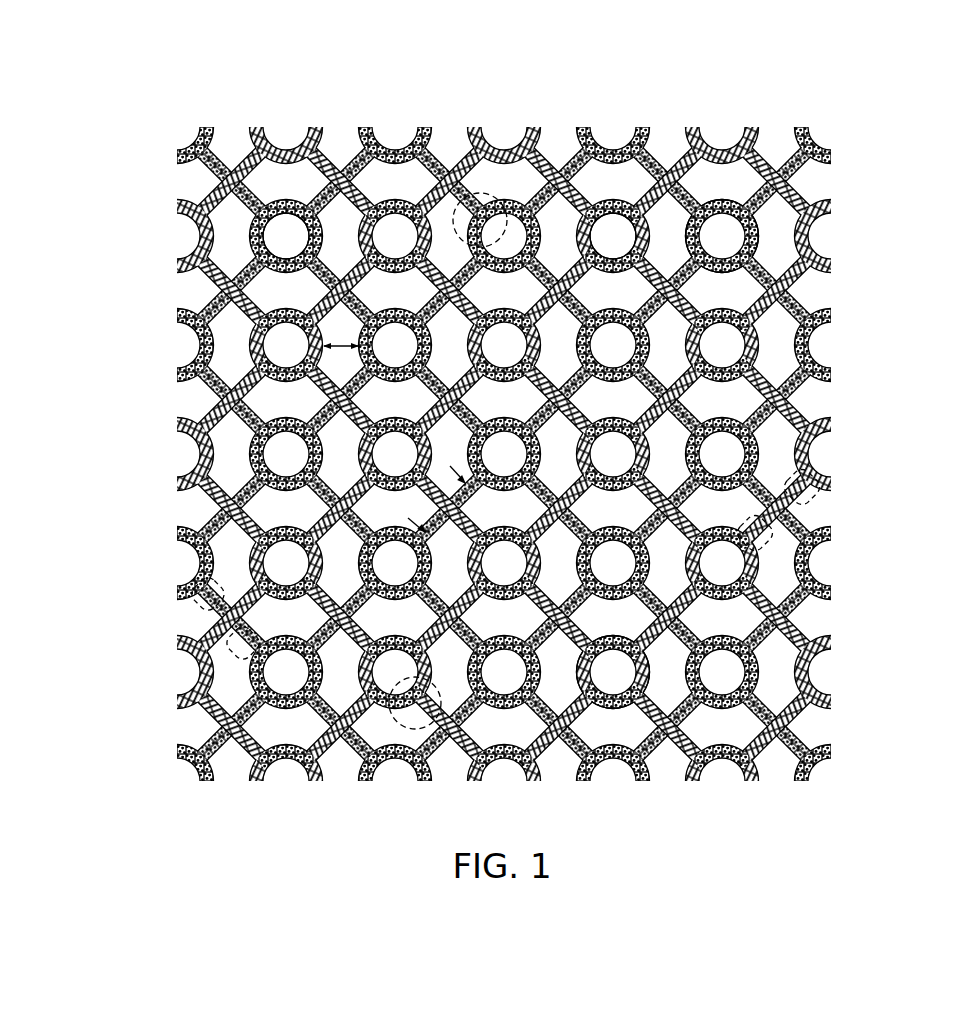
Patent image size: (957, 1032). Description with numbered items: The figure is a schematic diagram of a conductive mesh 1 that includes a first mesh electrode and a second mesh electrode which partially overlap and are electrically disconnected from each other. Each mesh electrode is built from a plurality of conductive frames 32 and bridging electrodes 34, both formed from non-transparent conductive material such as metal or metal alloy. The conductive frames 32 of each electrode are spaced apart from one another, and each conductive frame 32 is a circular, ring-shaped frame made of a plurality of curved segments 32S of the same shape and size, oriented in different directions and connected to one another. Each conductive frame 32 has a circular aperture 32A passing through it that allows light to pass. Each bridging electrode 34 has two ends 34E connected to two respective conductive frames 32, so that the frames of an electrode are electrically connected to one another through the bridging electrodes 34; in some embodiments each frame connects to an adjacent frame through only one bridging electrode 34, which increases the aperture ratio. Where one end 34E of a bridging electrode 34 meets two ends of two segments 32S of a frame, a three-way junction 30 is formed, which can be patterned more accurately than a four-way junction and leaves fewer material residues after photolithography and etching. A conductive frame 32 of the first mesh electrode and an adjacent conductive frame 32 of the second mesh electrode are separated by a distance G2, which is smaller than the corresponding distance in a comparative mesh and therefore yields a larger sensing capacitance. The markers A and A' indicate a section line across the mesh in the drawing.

The conductive mesh 1 is at (534, 447).
The three-way junction 30 is at (484, 194).
The conductive frame 32 is at (255, 233).
The aperture 32A is at (284, 224).
The segment 32S is at (722, 200).
The bridging electrode 34 is at (782, 285).
The end of bridging electrode 34E is at (816, 500).
The distance G2 is at (341, 332).
The section line end A is at (453, 463).
The section line end A' is at (407, 515).